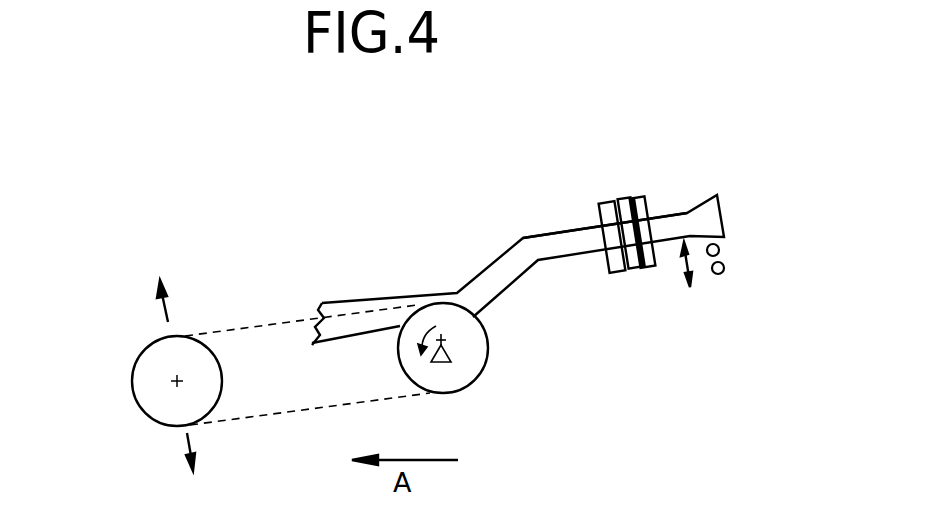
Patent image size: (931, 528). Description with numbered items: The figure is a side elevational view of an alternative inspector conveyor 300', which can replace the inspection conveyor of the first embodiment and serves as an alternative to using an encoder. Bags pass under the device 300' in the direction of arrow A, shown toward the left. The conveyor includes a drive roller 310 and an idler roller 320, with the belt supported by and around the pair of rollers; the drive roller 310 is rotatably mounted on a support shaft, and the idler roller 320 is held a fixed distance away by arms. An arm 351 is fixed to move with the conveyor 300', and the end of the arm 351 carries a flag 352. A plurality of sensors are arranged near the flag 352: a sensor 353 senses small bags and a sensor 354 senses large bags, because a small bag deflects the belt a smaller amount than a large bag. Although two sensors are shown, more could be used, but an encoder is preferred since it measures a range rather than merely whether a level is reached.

The inspector conveyor 300' is at (452, 258).
The drive roller 310 is at (472, 343).
The idler roller 320 is at (147, 387).
The arm 351 is at (555, 240).
The flag 352 is at (718, 210).
The sensor 353 is at (722, 252).
The sensor 354 is at (723, 278).